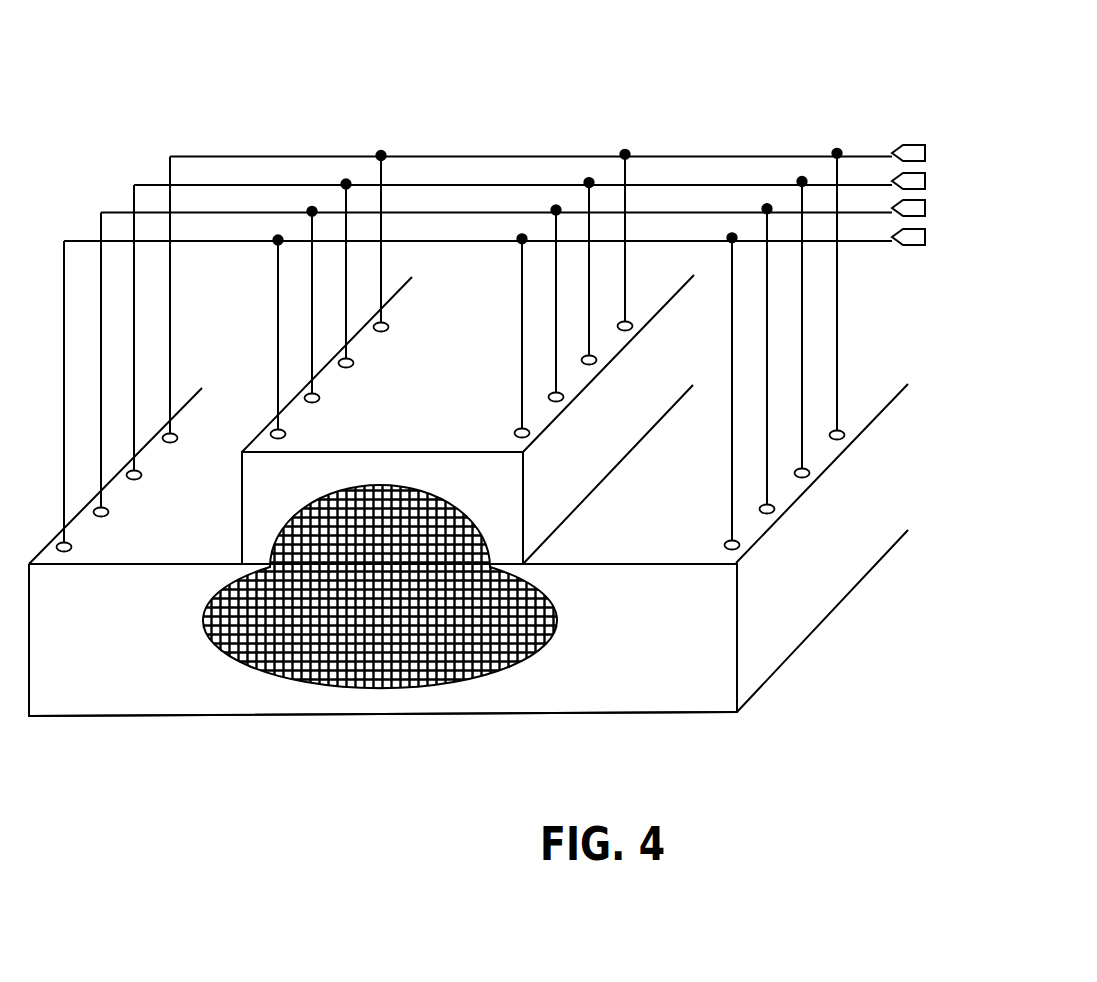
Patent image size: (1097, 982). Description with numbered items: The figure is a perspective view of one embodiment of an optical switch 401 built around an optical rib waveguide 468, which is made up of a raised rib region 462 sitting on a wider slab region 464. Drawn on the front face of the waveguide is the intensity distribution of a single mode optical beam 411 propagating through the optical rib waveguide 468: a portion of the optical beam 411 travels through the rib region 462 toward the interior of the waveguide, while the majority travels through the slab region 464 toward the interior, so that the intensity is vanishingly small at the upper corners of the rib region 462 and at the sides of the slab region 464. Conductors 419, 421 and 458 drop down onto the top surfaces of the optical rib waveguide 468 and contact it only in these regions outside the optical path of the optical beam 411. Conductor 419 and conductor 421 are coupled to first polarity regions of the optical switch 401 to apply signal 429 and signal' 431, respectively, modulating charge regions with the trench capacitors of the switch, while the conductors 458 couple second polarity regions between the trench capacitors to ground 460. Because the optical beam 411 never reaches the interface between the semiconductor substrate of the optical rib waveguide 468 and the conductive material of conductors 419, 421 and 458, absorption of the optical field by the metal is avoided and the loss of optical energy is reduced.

The optical switch 401 is at (811, 38).
The optical beam 411 is at (557, 622).
The conductor 419 is at (72, 240).
The conductor 421 is at (143, 184).
The signal 429 is at (1015, 232).
The signal' 431 is at (1013, 176).
The conductors 458 is at (185, 155).
The ground 460 is at (1020, 153).
The rib region 462 is at (513, 498).
The slab region 464 is at (732, 602).
The optical rib waveguide 468 is at (305, 745).